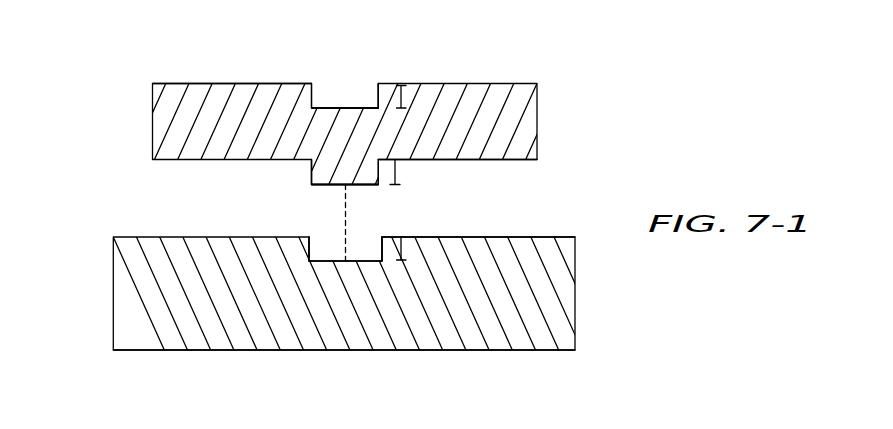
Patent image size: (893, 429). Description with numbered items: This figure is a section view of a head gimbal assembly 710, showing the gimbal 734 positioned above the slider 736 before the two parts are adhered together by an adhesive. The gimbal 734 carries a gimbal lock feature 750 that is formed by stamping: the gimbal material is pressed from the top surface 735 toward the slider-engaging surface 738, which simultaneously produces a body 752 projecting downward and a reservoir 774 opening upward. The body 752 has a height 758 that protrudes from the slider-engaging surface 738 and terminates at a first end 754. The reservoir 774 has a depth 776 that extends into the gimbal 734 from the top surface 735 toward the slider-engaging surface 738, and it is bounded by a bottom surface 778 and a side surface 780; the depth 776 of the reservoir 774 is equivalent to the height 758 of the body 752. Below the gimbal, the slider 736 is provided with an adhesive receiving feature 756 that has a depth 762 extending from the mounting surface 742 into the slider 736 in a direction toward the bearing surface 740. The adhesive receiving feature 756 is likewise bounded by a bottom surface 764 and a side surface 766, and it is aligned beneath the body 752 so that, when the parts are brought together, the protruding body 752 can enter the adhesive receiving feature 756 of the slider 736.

The head gimbal assembly 710 is at (594, 112).
The gimbal 734 is at (152, 135).
The top surface 735 is at (204, 84).
The slider 736 is at (113, 315).
The slider-engaging surface 738 is at (522, 160).
The bearing surface 740 is at (523, 350).
The mounting surface 742 is at (498, 237).
The gimbal lock feature 750 is at (282, 173).
The body 752 is at (343, 176).
The first end 754 is at (362, 185).
The adhesive receiving feature 756 is at (322, 276).
The height 758 is at (397, 163).
The depth 762 is at (403, 250).
The bottom surface 764 is at (349, 262).
The side surface 766 is at (309, 244).
The reservoir 774 is at (329, 83).
The depth 776 is at (404, 95).
The bottom surface 778 is at (350, 108).
The side surface 780 is at (378, 92).